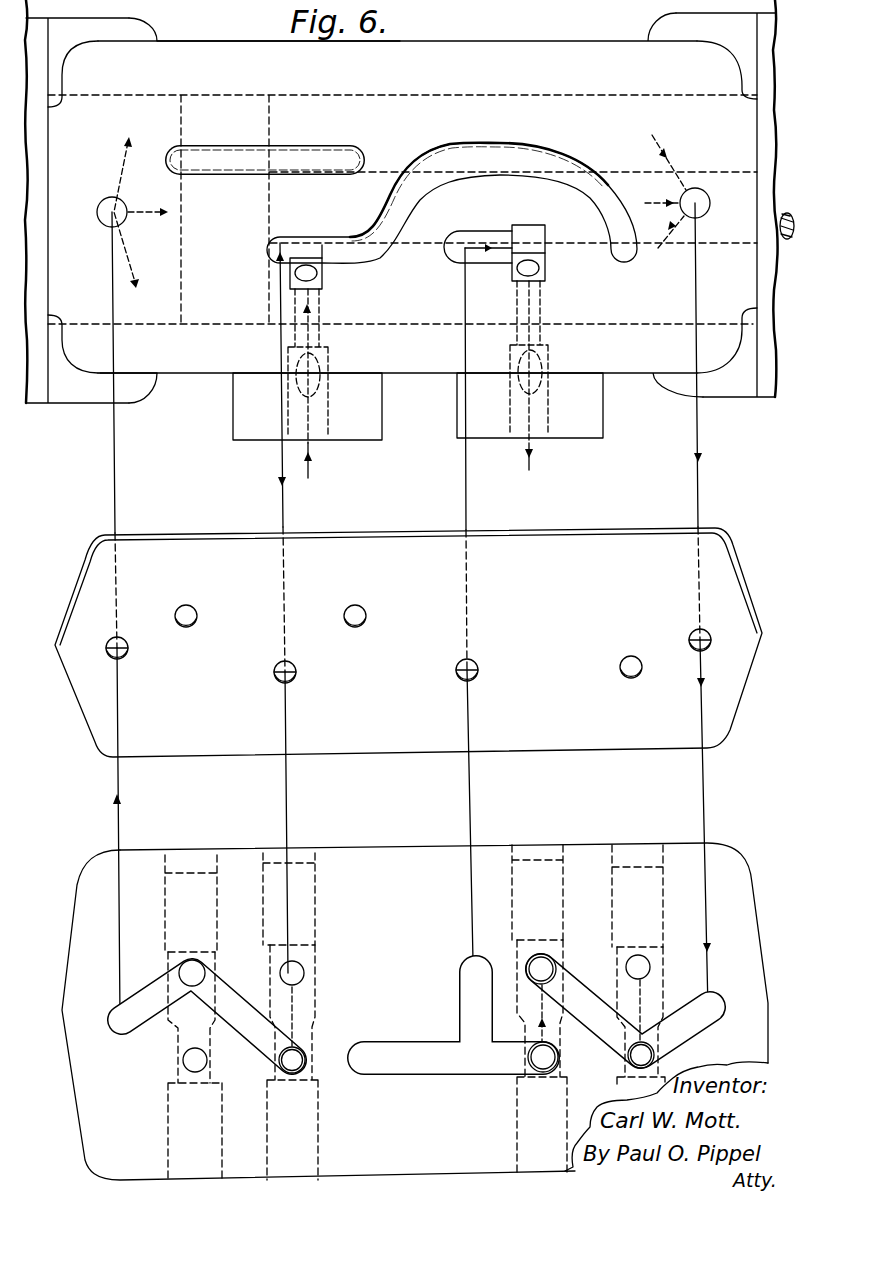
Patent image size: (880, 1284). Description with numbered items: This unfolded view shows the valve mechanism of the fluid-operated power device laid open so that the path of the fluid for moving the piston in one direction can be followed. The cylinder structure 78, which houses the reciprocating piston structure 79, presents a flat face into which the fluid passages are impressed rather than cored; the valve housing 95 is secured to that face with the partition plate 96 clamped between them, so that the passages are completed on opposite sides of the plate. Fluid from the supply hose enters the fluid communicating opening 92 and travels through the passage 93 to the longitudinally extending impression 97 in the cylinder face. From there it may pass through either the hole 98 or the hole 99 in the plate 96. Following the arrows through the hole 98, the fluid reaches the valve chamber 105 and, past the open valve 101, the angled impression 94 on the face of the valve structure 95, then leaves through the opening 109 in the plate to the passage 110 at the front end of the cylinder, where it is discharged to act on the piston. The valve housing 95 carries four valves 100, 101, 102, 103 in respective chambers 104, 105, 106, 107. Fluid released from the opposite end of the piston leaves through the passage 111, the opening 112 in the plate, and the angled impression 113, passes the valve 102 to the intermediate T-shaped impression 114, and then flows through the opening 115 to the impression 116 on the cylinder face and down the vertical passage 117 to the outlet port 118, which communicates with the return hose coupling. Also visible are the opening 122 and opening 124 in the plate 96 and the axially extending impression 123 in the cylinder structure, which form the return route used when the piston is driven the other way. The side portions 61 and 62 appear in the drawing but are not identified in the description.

The frame rail 61 is at (787, 173).
The top plate 62 is at (528, 34).
The cylinder structure 78 is at (196, 372).
The piston structure 79 is at (221, 125).
The fluid communicating opening 92 is at (322, 432).
The passage 93 is at (322, 328).
The angled impression 94 is at (134, 1028).
The valve housing 95 is at (86, 873).
The partition plate 96 is at (83, 555).
The longitudinally extending impression 97 is at (374, 232).
The hole 98 is at (292, 678).
The hole 99 is at (624, 676).
The piston valve 100 is at (177, 1020).
The valve 101 is at (314, 995).
The valve 102 is at (517, 983).
The valve 103 is at (669, 962).
The valve chamber 104 is at (172, 936).
The valve chamber 105 is at (308, 920).
The valve chamber 106 is at (517, 918).
The valve chamber 107 is at (663, 910).
The opening 109 is at (128, 653).
The passage 110 is at (100, 203).
The passage 111 is at (728, 213).
The opening 112 is at (693, 633).
The angled impression 113 is at (685, 1037).
The T-shaped impression 114 is at (460, 1070).
The opening 115 is at (458, 665).
The impression 116 is at (481, 238).
The vertical passage 117 is at (536, 309).
The outlet port 118 is at (542, 438).
The opening 122 is at (194, 606).
The axially extending impression 123 is at (312, 134).
The opening 124 is at (362, 606).